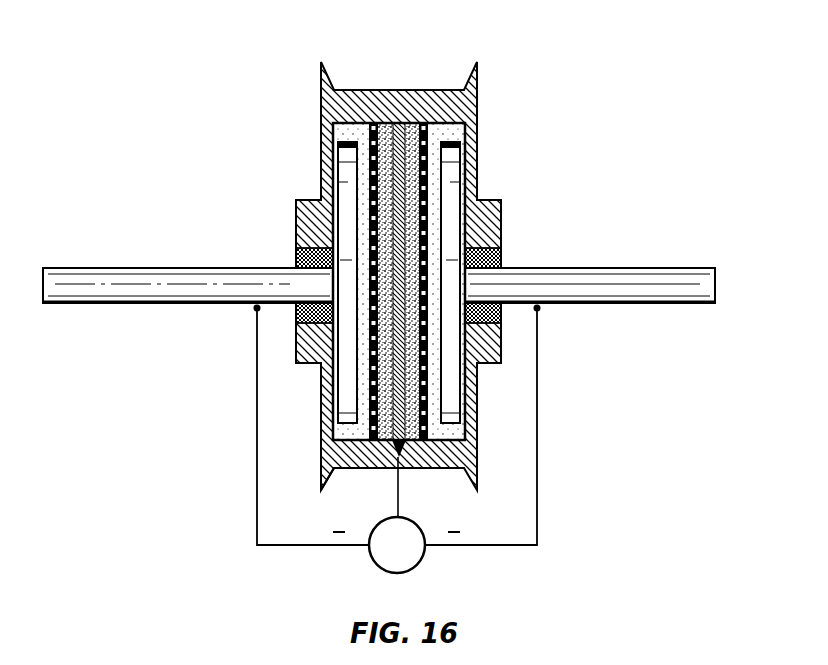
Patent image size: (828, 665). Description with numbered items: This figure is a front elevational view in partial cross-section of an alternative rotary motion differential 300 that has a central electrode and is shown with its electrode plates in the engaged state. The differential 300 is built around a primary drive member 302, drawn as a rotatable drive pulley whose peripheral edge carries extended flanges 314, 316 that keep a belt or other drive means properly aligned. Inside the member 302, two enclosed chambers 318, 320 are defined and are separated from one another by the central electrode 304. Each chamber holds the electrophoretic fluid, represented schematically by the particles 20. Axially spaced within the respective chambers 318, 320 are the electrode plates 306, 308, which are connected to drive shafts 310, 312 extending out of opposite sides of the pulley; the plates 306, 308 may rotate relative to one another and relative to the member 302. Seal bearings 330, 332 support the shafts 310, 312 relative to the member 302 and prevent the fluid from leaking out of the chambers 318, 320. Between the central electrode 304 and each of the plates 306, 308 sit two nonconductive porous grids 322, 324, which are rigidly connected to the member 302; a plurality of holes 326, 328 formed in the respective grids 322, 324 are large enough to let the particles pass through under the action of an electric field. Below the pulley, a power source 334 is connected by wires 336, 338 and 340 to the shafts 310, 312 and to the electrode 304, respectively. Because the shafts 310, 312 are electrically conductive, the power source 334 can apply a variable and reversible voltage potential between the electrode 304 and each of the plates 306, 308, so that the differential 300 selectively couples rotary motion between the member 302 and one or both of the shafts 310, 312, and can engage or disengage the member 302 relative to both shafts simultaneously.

The rotary motion differential 300 is at (224, 110).
The primary drive member 302 is at (400, 91).
The central electrode 304 is at (394, 121).
The particles 20 is at (440, 123).
The extended flange 314 is at (324, 62).
The extended flange 316 is at (477, 64).
The enclosed chamber 318 is at (333, 133).
The enclosed chamber 320 is at (465, 133).
The drive shaft 310 is at (76, 280).
The drive shaft 312 is at (673, 279).
The seal bearing 330 is at (296, 262).
The seal bearing 332 is at (501, 262).
The holes 326 is at (370, 333).
The holes 328 is at (428, 333).
The electrode plate 306 is at (347, 403).
The electrode plate 308 is at (450, 403).
The nonconductive porous grid 322 is at (346, 478).
The nonconductive porous grid 324 is at (445, 452).
The power source 334 is at (418, 566).
The wire 336 is at (257, 488).
The wire 338 is at (538, 490).
The wire 340 is at (401, 480).